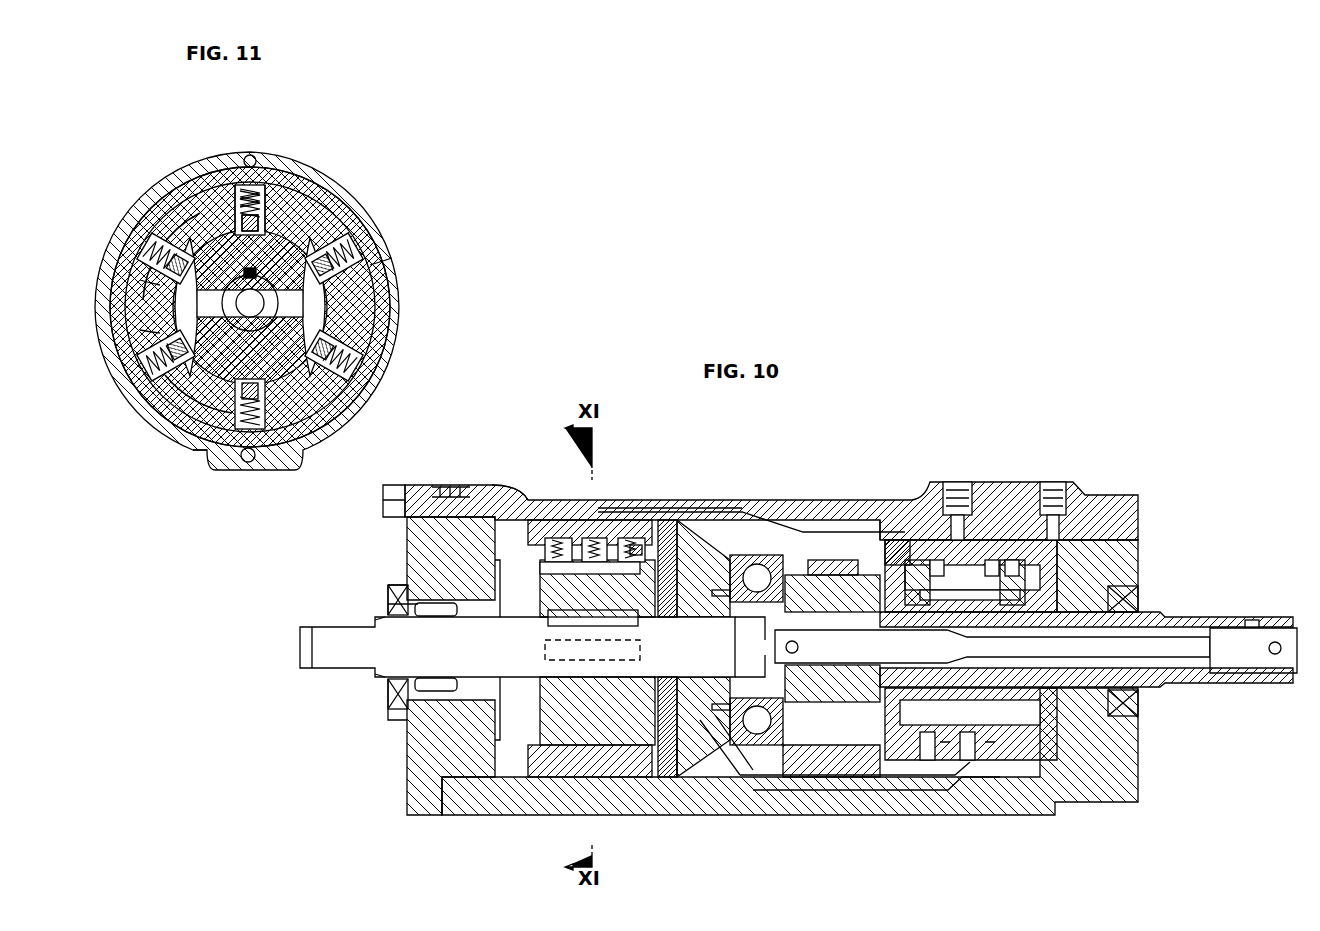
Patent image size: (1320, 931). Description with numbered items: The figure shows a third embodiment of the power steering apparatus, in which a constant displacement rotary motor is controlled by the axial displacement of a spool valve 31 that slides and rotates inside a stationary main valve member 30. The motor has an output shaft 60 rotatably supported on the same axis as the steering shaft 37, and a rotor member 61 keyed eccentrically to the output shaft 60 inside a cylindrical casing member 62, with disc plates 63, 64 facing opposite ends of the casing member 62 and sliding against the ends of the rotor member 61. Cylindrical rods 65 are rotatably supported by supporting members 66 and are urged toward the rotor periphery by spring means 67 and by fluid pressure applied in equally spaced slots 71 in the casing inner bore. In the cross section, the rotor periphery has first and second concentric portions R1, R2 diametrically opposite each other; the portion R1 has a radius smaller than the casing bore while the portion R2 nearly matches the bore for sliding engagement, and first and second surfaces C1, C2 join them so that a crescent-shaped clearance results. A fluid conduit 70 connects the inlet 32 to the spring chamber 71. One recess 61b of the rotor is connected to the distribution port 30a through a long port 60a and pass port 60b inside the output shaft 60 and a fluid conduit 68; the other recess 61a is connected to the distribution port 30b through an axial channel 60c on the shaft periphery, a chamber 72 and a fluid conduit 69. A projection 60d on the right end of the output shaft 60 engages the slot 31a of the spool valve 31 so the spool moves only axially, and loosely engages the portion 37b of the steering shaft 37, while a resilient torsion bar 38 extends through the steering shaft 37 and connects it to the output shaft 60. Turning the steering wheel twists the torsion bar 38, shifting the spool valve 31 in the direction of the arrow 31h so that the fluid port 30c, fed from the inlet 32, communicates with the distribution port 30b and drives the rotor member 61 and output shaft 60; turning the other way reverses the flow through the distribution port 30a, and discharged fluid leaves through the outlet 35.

In FIG. 10, the main valve member 30 is at (1030, 765).
In FIG. 10, the distribution port 30a is at (938, 560).
In FIG. 10, the distribution port 30b is at (1015, 555).
In FIG. 10, the fluid port 30c is at (990, 560).
In FIG. 10, the spool valve 31 is at (945, 742).
In FIG. 10, the radial slot 31a is at (910, 555).
In FIG. 10, the arrow 31h is at (1000, 758).
In FIG. 10, the inlet 32 is at (965, 500).
In FIG. 10, the outlet 35 is at (1055, 490).
In FIG. 10, the steering shaft 37 is at (1152, 685).
In FIG. 10, the portion of the steering shaft 37b is at (832, 500).
In FIG. 10, the torsion bar 38 is at (1180, 640).
In FIG. 11, the output shaft 60 is at (343, 196).
In FIG. 10, the output shaft 60 is at (760, 648).
In FIG. 11, the long port 60a is at (195, 425).
In FIG. 10, the long port 60a is at (710, 795).
In FIG. 10, the pass port 60b is at (743, 650).
In FIG. 11, the channel 60c is at (150, 285).
In FIG. 10, the channel 60c is at (537, 818).
In FIG. 10, the projection 60d is at (868, 548).
In FIG. 11, the rotor member 61 is at (300, 395).
In FIG. 10, the rotor member 61 is at (625, 762).
In FIG. 11, the recess 61a is at (140, 330).
In FIG. 11, the recess 61b is at (392, 258).
In FIG. 11, the casing member 62 is at (372, 212).
In FIG. 10, the casing member 62 is at (600, 762).
In FIG. 10, the disc plate 63 is at (492, 487).
In FIG. 10, the disc plate 64 is at (672, 520).
In FIG. 11, the cylindrical rods 65 is at (270, 228).
In FIG. 10, the cylindrical rods 65 is at (612, 562).
In FIG. 11, the supporting members 66 is at (222, 205).
In FIG. 10, the supporting members 66 is at (530, 535).
In FIG. 11, the spring means 67 is at (258, 210).
In FIG. 10, the spring means 67 is at (595, 540).
In FIG. 10, the fluid conduit 68 is at (790, 777).
In FIG. 11, the fluid conduit 69 is at (250, 462).
In FIG. 10, the fluid conduit 69 is at (858, 795).
In FIG. 11, the fluid conduit 70 is at (250, 155).
In FIG. 10, the fluid conduit 70 is at (768, 512).
In FIG. 11, the slots 71 is at (272, 215).
In FIG. 10, the slots 71 is at (650, 545).
In FIG. 10, the chamber 72 is at (497, 728).
In FIG. 11, the first surface C1 is at (176, 305).
In FIG. 11, the second surface C2 is at (335, 300).
In FIG. 11, the first concentric portion R1 is at (220, 230).
In FIG. 11, the second concentric portion R2 is at (230, 380).